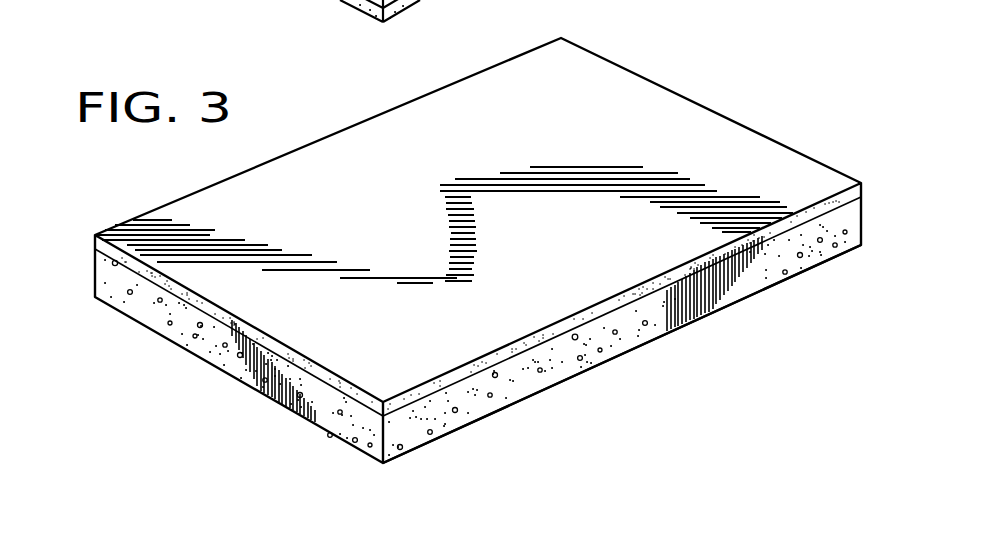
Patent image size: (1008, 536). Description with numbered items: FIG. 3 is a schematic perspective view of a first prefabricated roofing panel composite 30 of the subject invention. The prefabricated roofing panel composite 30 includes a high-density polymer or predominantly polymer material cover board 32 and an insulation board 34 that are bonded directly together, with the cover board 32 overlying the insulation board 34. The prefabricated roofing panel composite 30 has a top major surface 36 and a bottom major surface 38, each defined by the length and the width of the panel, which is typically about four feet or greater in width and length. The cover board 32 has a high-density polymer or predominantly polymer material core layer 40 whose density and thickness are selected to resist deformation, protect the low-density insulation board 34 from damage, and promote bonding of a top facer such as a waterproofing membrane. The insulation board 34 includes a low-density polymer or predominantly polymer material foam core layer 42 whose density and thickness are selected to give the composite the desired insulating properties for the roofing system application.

The prefabricated roofing panel composite 30 is at (739, 82).
The cover board 32 is at (180, 297).
The insulation board 34 is at (212, 349).
The top major surface 36 is at (723, 180).
The bottom major surface 38 is at (725, 308).
The high-density polymer or predominantly polymer material core layer 40 is at (607, 312).
The low-density polymer or predominantly polymer material foam core layer 42 is at (563, 367).